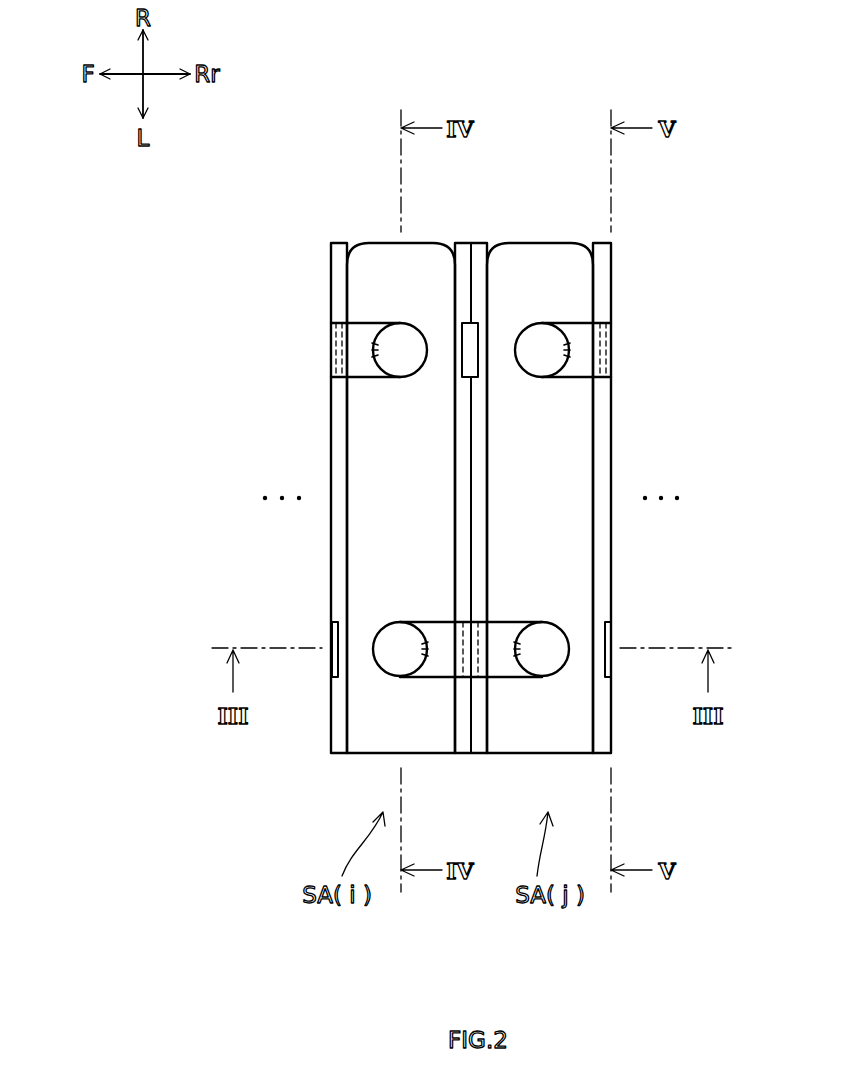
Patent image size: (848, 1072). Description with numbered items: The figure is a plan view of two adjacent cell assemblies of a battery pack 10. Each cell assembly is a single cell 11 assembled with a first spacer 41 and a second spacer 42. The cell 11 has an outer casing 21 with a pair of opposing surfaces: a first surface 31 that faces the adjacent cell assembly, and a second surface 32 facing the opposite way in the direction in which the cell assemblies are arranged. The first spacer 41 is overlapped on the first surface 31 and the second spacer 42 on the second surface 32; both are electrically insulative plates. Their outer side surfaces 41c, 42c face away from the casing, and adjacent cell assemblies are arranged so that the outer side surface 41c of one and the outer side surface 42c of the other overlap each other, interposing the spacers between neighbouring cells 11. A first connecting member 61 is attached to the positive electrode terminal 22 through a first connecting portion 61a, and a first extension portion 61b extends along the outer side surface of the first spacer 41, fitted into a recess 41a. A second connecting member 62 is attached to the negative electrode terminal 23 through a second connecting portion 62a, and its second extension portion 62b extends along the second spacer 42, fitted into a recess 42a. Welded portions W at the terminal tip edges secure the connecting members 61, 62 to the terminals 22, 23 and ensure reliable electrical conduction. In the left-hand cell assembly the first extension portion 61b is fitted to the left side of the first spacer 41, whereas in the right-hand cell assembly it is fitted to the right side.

The battery pack 10 is at (728, 104).
The cell 11 is at (375, 243).
The outer casing 21 is at (358, 514).
The positive electrode terminal 22 is at (521, 326).
The negative electrode terminal 23 is at (419, 324).
The first surface 31 is at (456, 506).
The second surface 32 is at (488, 506).
The first spacer 41 is at (611, 253).
The recess 41a is at (466, 394).
The outer side surface 41c is at (611, 467).
The second spacer 42 is at (331, 250).
The recess 42a is at (486, 392).
The outer side surface 42c is at (331, 467).
The first connecting member 61 is at (567, 322).
The first connecting portion 61a is at (518, 388).
The first extension portion 61b is at (611, 352).
The second connecting member 62 is at (372, 322).
The second connecting portion 62a is at (423, 388).
The second extension portion 62b is at (331, 352).
The welded portion W is at (368, 324).